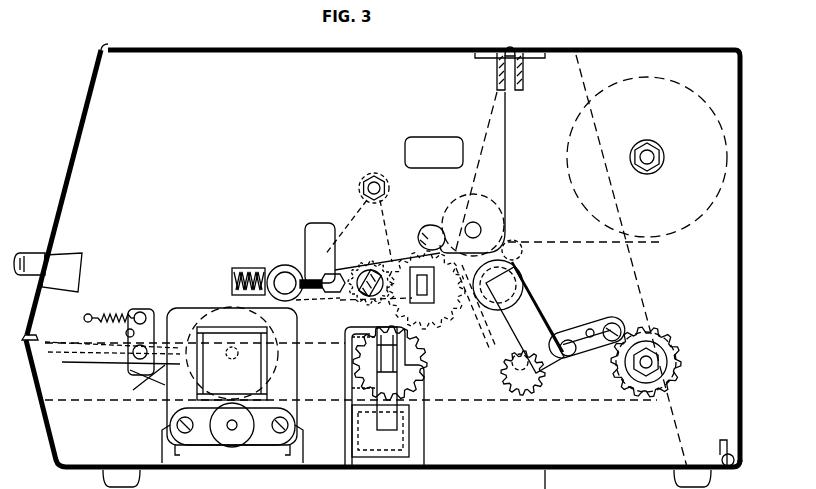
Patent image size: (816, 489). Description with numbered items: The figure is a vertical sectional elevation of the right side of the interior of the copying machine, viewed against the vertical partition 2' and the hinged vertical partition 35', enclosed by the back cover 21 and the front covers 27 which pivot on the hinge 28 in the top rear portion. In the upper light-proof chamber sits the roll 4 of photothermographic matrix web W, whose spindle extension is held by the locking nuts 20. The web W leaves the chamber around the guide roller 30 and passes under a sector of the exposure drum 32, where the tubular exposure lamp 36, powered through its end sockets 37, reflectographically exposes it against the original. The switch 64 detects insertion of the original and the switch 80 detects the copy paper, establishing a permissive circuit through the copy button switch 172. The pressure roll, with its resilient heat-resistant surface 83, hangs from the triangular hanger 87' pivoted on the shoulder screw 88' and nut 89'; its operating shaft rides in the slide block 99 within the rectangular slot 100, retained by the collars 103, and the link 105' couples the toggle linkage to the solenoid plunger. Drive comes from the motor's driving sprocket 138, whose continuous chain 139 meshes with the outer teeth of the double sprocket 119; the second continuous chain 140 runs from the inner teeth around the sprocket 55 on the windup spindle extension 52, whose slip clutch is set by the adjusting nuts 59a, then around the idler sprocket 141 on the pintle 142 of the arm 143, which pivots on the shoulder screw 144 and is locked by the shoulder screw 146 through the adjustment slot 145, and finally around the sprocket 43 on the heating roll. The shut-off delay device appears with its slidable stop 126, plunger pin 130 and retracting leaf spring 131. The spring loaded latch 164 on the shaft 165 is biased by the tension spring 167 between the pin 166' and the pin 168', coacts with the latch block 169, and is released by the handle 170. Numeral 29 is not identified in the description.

The vertical partition 2' is at (543, 111).
The roll of photothermographic matrix web 4 is at (566, 155).
The locking nuts 20 is at (652, 176).
The back cover 21 is at (737, 262).
The front covers 27 is at (82, 134).
The hinge 28 is at (510, 47).
The bottom wall 29 is at (42, 420).
The guide roller 30 is at (523, 252).
The exposure drum 32 is at (458, 200).
The hinged vertical partition 35' is at (412, 103).
The tubular exposure lamp 36 is at (524, 292).
The end sockets 37 is at (540, 318).
The sprocket 43 is at (403, 242).
The threaded spindle extension 52 is at (652, 362).
The sprocket 55 is at (672, 374).
The adjusting nuts 59a is at (670, 386).
The switch 64 is at (445, 162).
The switch 80 is at (330, 253).
The resilient heat-resistant surface 83 is at (376, 258).
The triangularly shaped hanger 87' is at (370, 255).
The shoulder screw 88' is at (358, 207).
The nut 89' is at (389, 188).
The slide block 99 is at (280, 266).
The rectangular slot 100 is at (238, 266).
The collars 103 is at (284, 262).
The link 105' is at (325, 309).
The double sprocket 119 is at (412, 360).
The slidable stop 126 is at (372, 348).
The pin 130 is at (372, 376).
The retracting leaf spring 131 is at (400, 384).
The driving sprocket 138 is at (222, 306).
The continuous chain 139 is at (340, 400).
The second continuous chain 140 is at (464, 256).
The idler sprocket 141 is at (508, 378).
The pintle 142 is at (524, 396).
The arm 143 is at (590, 328).
The shoulder screw 144 is at (612, 323).
The adjustment slot 145 is at (578, 340).
The shoulder screw 146 is at (570, 358).
The spring loaded latch 164 is at (152, 318).
The shaft 165 is at (136, 360).
The pin 166' is at (153, 299).
The tension spring 167 is at (116, 314).
The pin 168' is at (85, 310).
The latch block 169 is at (148, 378).
The handle 170 is at (60, 362).
The copy button switch 172 is at (34, 250).
The photothermographic matrix web W is at (583, 244).